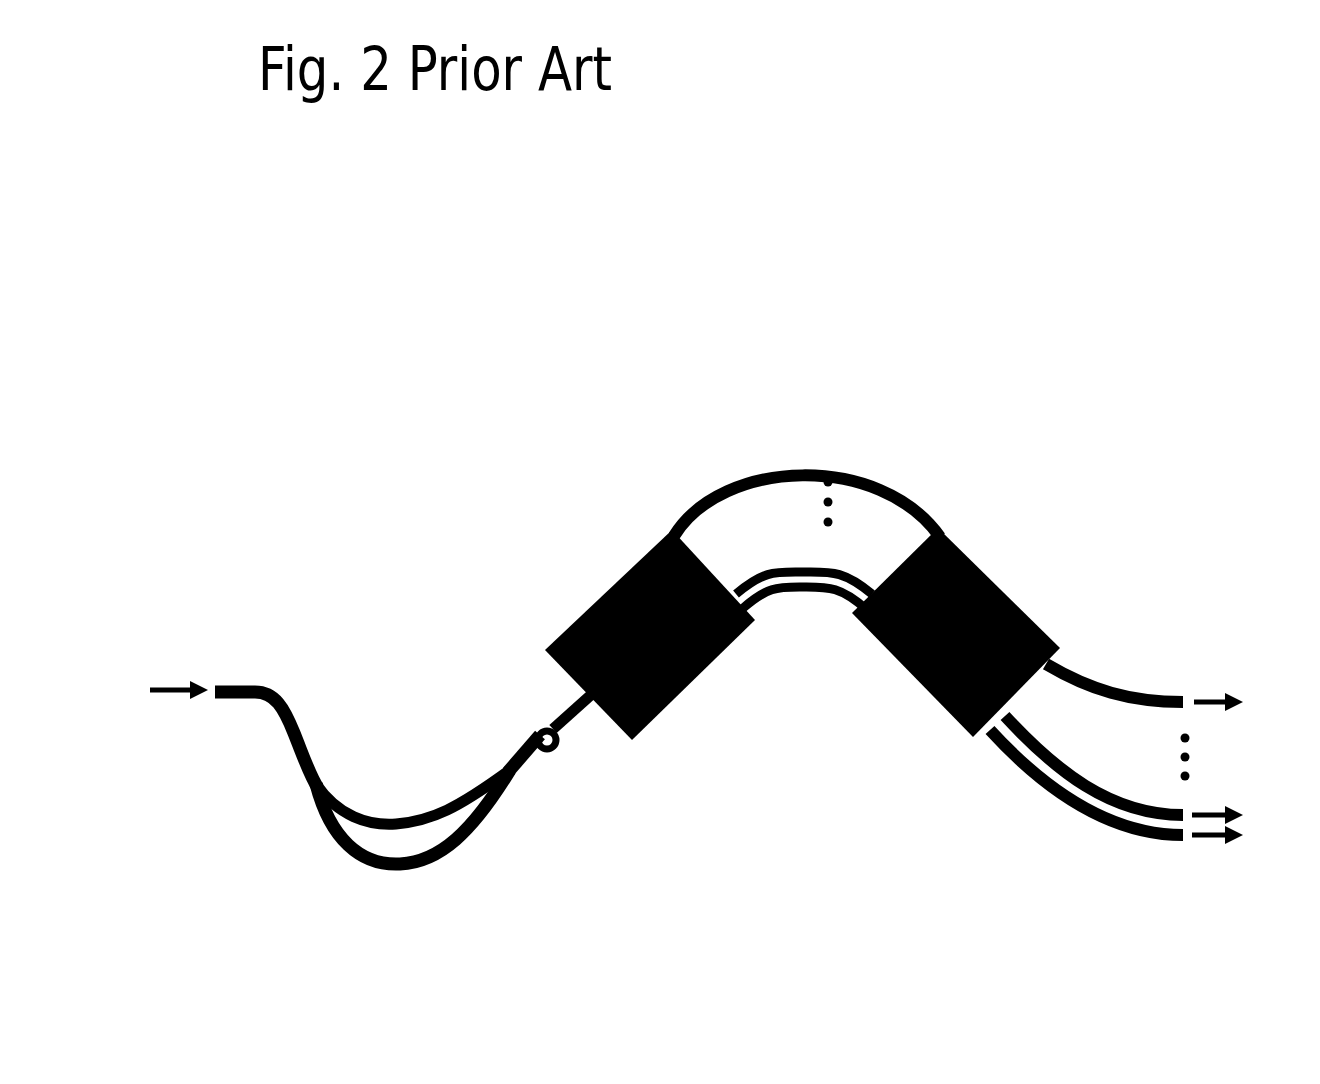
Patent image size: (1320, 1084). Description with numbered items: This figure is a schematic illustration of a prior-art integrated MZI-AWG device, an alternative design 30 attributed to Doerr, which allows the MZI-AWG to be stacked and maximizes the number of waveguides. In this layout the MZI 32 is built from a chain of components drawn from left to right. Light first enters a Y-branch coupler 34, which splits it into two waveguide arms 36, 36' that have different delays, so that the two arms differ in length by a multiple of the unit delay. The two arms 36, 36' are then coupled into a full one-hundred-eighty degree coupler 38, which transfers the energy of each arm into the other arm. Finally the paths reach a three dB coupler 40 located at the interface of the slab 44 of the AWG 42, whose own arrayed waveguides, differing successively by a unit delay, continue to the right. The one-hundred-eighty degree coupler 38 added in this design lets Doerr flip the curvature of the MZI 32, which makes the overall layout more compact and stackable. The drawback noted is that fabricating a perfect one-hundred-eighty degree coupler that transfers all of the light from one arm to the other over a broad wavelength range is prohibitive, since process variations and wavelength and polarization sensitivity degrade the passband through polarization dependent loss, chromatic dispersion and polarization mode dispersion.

The alternative design 30 is at (1086, 392).
The MZI 32 is at (333, 588).
The Y-branch coupler 34 is at (281, 728).
The waveguide arm 36 is at (413, 763).
The waveguide arm 36' is at (413, 866).
The 180 degree coupler 38 is at (510, 780).
The 3 dB coupler 40 is at (540, 718).
The AWG 42 is at (768, 384).
The slab 44 is at (632, 563).